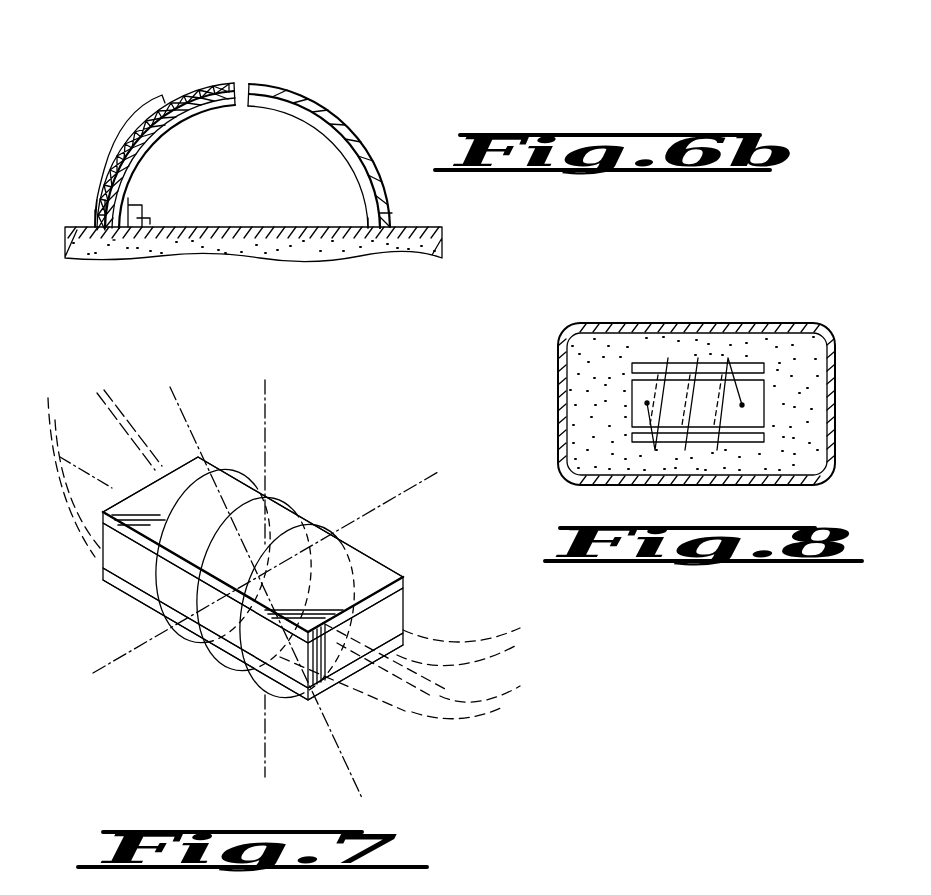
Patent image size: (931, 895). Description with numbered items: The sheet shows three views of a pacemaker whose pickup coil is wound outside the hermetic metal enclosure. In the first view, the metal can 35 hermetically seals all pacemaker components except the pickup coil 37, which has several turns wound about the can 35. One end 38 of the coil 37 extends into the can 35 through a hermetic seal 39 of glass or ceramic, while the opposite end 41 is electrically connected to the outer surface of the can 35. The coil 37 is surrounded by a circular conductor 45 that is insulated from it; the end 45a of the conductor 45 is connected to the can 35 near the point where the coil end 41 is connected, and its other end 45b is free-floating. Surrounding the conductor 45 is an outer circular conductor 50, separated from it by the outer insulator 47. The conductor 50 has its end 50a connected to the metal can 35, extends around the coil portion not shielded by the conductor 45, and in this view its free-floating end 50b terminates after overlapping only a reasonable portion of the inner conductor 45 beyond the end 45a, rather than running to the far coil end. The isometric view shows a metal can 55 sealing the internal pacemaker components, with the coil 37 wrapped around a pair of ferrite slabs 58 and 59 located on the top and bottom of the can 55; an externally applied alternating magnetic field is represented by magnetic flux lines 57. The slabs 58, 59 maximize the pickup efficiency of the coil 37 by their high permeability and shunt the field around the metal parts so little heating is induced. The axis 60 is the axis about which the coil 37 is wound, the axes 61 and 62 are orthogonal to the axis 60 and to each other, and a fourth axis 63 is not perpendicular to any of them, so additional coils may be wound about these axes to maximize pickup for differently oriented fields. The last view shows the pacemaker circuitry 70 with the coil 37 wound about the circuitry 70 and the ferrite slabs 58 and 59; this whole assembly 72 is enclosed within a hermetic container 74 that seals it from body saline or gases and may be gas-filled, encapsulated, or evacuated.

In FIG. 6b, the metal can 35 is at (262, 231).
In FIG. 6b, the pickup coil 37 is at (313, 97).
In FIG. 7, the pickup coil 37 is at (318, 524).
In FIG. 8, the pickup coil 37 is at (705, 388).
In FIG. 6b, the coil end 38 is at (137, 222).
In FIG. 6b, the hermetic seal 39 is at (113, 243).
In FIG. 6b, the coil end 41 is at (392, 215).
In FIG. 6b, the circular conductor 45 is at (366, 124).
In FIG. 6b, the conductor end 45a is at (368, 218).
In FIG. 6b, the free-floating end 45b is at (103, 197).
In FIG. 6b, the outer insulator 47 is at (147, 118).
In FIG. 6b, the outer circular conductor 50 is at (116, 124).
In FIG. 6b, the conductor end 50a is at (97, 225).
In FIG. 6b, the free-floating end 50b is at (167, 95).
In FIG. 7, the metal can 55 is at (320, 710).
In FIG. 7, the magnetic flux lines 57 is at (110, 437).
In FIG. 7, the ferrite slab 58 is at (405, 582).
In FIG. 8, the ferrite slab 58 is at (765, 368).
In FIG. 7, the ferrite slab 59 is at (318, 702).
In FIG. 8, the ferrite slab 59 is at (765, 438).
In FIG. 7, the coil axis 60 is at (83, 472).
In FIG. 7, the axis 61 is at (268, 410).
In FIG. 7, the axis 62 is at (412, 484).
In FIG. 7, the fourth axis 63 is at (182, 411).
In FIG. 8, the pacemaker circuitry 70 is at (778, 410).
In FIG. 8, the assembly 72 is at (595, 413).
In FIG. 8, the hermetic container 74 is at (560, 370).